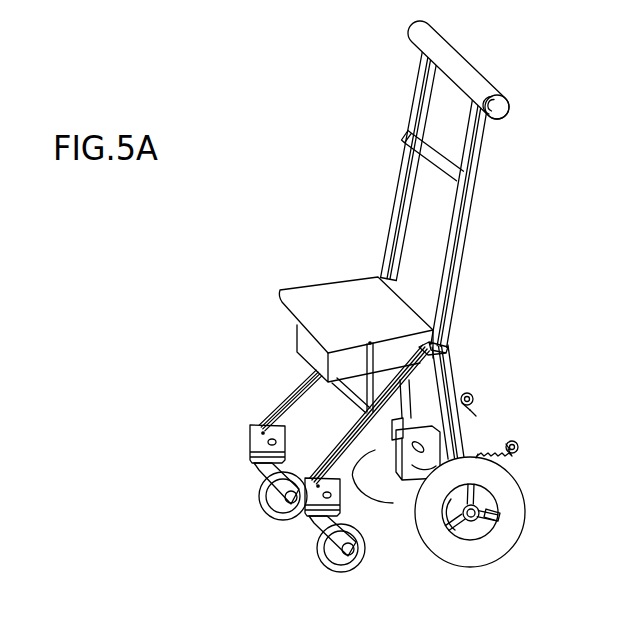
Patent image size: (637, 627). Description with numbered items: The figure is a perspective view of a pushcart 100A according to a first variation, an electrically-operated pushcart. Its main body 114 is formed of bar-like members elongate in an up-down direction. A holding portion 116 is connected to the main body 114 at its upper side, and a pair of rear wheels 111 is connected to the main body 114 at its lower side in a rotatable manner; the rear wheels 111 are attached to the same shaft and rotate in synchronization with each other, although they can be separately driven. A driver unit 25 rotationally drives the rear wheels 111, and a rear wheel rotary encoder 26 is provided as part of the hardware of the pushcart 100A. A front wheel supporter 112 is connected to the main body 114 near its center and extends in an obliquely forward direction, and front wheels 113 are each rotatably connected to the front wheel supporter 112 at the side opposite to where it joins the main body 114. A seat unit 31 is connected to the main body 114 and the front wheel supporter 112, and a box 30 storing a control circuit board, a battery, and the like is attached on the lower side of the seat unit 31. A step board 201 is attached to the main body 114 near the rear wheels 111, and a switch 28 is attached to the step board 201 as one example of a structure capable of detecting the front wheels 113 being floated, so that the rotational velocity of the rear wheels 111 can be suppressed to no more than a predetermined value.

The pushcart 100A is at (325, 108).
The holding portion 116 is at (470, 62).
The main body 114 is at (394, 205).
The seat unit 31 is at (295, 299).
The box 30 is at (293, 337).
The front wheel supporter 112 is at (291, 384).
The front wheels 113 is at (262, 488).
The rear wheels 111 is at (378, 485).
The driver unit 25 is at (397, 483).
The rear wheel rotary encoder 26 is at (481, 516).
The switch 28 is at (471, 393).
The step board 201 is at (478, 407).